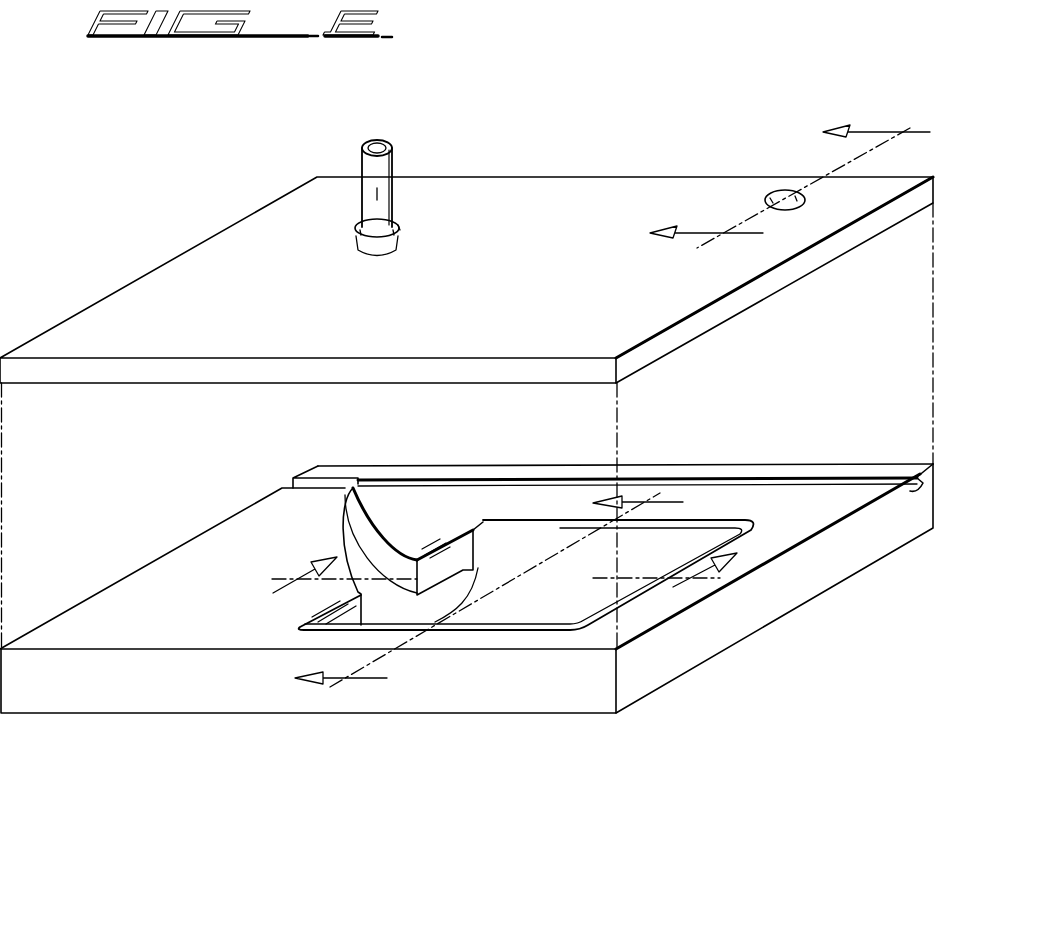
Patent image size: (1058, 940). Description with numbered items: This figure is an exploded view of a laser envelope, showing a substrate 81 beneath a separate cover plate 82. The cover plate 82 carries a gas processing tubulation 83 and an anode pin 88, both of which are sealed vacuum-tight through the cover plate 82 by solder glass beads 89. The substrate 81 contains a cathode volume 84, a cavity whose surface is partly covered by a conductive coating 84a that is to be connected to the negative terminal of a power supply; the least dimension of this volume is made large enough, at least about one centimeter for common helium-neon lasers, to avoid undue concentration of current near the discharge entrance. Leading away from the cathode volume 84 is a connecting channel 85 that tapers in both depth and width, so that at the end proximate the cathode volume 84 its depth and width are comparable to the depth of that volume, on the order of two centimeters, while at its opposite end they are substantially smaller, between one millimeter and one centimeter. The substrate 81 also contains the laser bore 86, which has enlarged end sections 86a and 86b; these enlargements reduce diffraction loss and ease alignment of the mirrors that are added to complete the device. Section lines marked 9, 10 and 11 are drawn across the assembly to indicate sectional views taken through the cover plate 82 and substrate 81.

The substrate 81 is at (140, 699).
The cover plate 82 is at (217, 245).
The gas processing tubulation 83 is at (368, 168).
The cathode volume 84 is at (493, 606).
The conductive coating 84a is at (578, 632).
The connecting channel 85 is at (366, 550).
The laser bore 86 is at (477, 481).
The enlarged end section 86a is at (331, 481).
The enlarged end section 86b is at (847, 479).
The anode pin 88 is at (786, 198).
The solder glass beads 89 is at (397, 223).
The section line 9- 9 is at (766, 186).
The section line 10- 10 is at (515, 592).
The section line 11- 11 is at (490, 591).